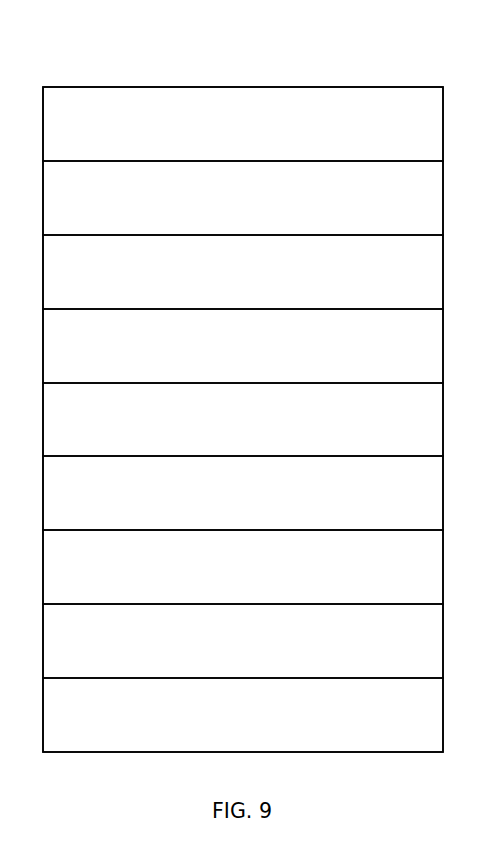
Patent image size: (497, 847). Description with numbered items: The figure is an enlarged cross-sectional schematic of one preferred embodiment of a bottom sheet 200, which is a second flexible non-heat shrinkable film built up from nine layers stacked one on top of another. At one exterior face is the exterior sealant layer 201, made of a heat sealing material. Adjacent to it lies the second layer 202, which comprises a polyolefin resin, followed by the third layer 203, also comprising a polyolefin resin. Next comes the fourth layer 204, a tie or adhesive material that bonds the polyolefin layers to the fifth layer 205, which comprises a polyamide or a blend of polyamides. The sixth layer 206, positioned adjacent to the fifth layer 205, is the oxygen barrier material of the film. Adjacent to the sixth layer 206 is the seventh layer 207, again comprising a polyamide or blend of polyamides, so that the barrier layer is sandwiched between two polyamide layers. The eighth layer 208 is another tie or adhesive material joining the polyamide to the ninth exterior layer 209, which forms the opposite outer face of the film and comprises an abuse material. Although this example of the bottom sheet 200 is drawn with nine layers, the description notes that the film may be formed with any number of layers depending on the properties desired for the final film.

The bottom sheet 200 is at (242, 52).
The exterior sealant layer 201 is at (243, 124).
The second layer 202 is at (243, 198).
The third layer 203 is at (243, 272).
The fourth layer 204 is at (243, 346).
The fifth layer 205 is at (243, 419).
The sixth layer 206 is at (243, 493).
The seventh layer 207 is at (243, 567).
The eighth layer 208 is at (243, 641).
The ninth exterior layer 209 is at (243, 715).